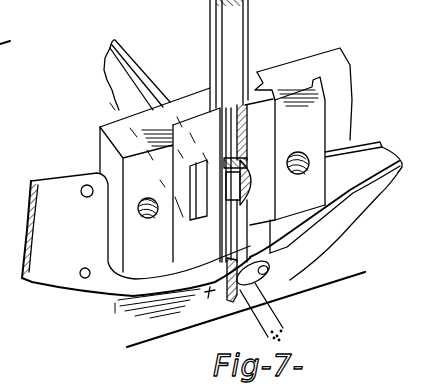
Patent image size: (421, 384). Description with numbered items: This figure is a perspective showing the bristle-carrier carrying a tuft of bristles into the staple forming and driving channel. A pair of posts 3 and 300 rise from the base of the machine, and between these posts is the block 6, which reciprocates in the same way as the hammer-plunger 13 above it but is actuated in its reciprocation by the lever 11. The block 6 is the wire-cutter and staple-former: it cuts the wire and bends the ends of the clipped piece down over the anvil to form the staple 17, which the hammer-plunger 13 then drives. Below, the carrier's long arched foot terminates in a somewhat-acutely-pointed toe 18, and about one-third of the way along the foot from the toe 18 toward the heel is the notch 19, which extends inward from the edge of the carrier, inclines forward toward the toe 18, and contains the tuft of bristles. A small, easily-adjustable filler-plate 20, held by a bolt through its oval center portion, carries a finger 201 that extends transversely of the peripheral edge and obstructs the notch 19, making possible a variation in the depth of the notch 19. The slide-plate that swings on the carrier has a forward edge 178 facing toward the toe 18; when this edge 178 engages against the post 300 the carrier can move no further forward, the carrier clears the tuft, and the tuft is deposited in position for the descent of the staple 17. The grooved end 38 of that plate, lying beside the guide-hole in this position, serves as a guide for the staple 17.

The post 3 is at (313, 122).
The block 6 is at (200, 130).
The lever 11 is at (131, 68).
The hammer-plunger 13 is at (238, 39).
The staple 17 is at (252, 174).
The toe 18 is at (376, 194).
The notch 19 is at (258, 322).
The filler-plate 20 is at (242, 308).
The end of the plate 38 is at (211, 292).
The forward edge of the plate 178 is at (108, 239).
The finger 201 is at (265, 283).
The post 300 is at (137, 182).